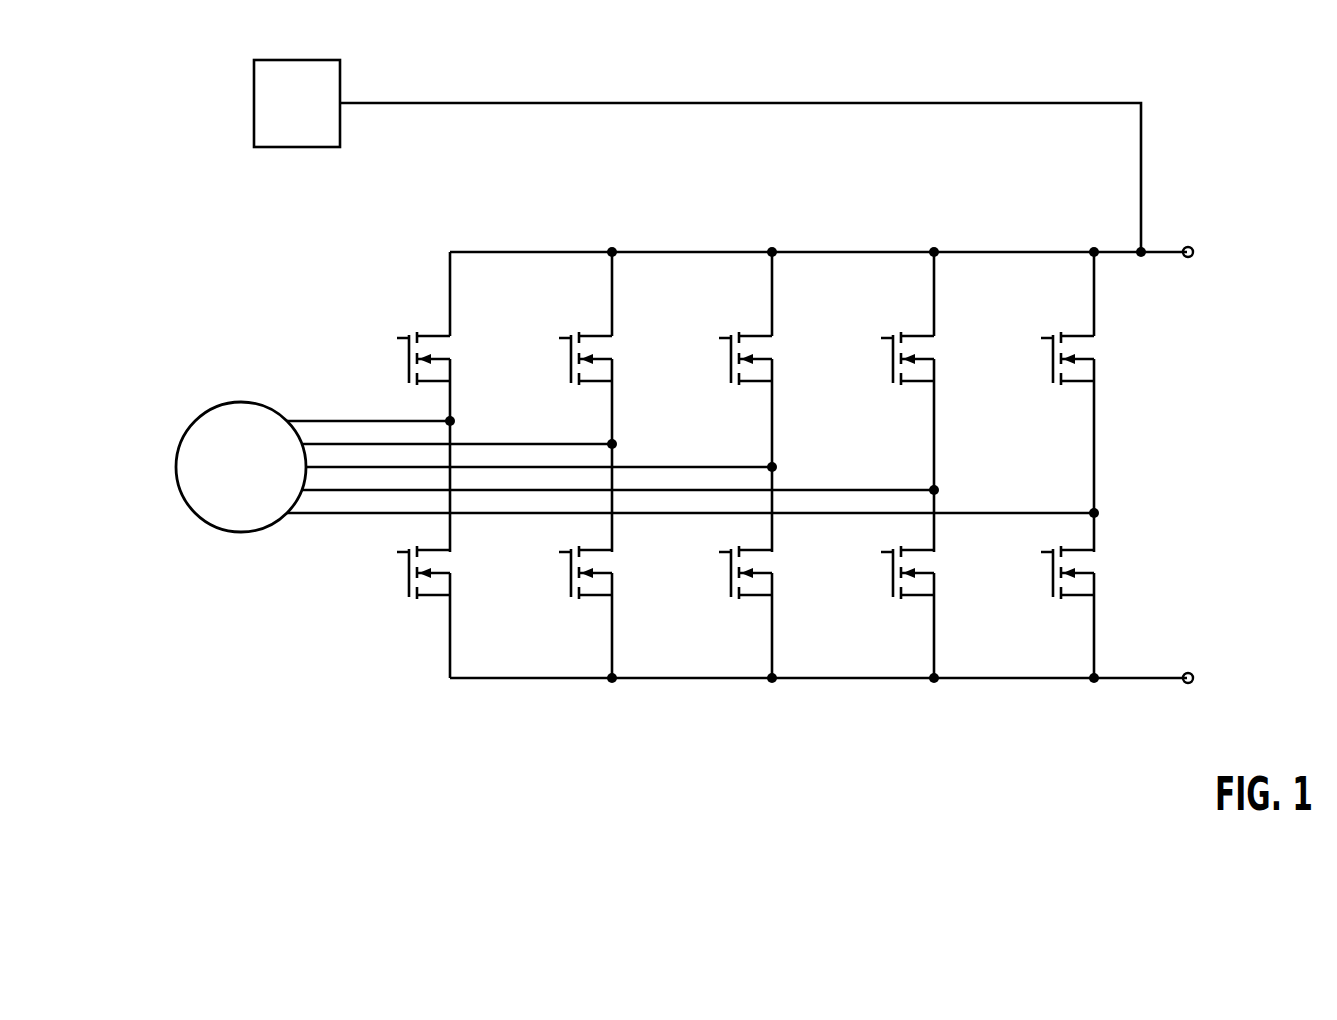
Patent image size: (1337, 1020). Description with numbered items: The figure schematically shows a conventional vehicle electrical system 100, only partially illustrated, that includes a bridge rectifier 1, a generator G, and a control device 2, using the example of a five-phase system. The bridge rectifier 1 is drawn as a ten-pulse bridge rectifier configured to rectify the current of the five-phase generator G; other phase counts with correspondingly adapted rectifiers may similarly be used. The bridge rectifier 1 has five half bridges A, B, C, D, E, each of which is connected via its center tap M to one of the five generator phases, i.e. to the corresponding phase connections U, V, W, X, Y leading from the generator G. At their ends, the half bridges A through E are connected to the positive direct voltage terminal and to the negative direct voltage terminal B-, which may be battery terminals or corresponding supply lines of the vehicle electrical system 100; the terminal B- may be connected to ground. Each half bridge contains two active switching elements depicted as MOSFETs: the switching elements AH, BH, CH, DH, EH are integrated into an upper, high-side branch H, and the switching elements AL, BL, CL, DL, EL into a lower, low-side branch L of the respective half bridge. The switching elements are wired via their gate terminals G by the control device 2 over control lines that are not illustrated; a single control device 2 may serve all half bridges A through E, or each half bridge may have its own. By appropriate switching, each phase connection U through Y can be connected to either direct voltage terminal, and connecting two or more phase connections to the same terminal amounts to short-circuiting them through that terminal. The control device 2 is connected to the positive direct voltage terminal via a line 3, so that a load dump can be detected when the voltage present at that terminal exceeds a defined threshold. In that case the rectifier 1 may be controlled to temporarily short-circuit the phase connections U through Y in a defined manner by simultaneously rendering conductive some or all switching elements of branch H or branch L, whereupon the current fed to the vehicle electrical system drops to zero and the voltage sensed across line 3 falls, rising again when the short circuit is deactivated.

The bridge rectifier 1 is at (813, 220).
The control device 2 is at (296, 137).
The line 3 is at (1141, 164).
The vehicle electrical system 100 is at (305, 697).
The generator G is at (711, 434).
The center tap M is at (808, 452).
The phase connection U is at (314, 421).
The phase connection V is at (344, 444).
The phase connection W is at (379, 467).
The phase connection X is at (320, 490).
The phase connection Y is at (355, 513).
The active switching element AH is at (461, 352).
The active switching element BH is at (623, 352).
The active switching element CH is at (783, 352).
The active switching element DH is at (945, 352).
The active switching element EH is at (1105, 352).
The active switching element AL is at (461, 575).
The active switching element BL is at (623, 575).
The active switching element CL is at (783, 575).
The active switching element DL is at (945, 575).
The active switching element EL is at (1105, 575).
The half bridge A is at (450, 705).
The half bridge B is at (612, 705).
The half bridge C is at (772, 705).
The half bridge D is at (934, 705).
The half bridge E is at (1094, 705).
The upper branch H is at (1217, 353).
The lower branch L is at (1216, 572).
The direct voltage terminal B- is at (1209, 679).